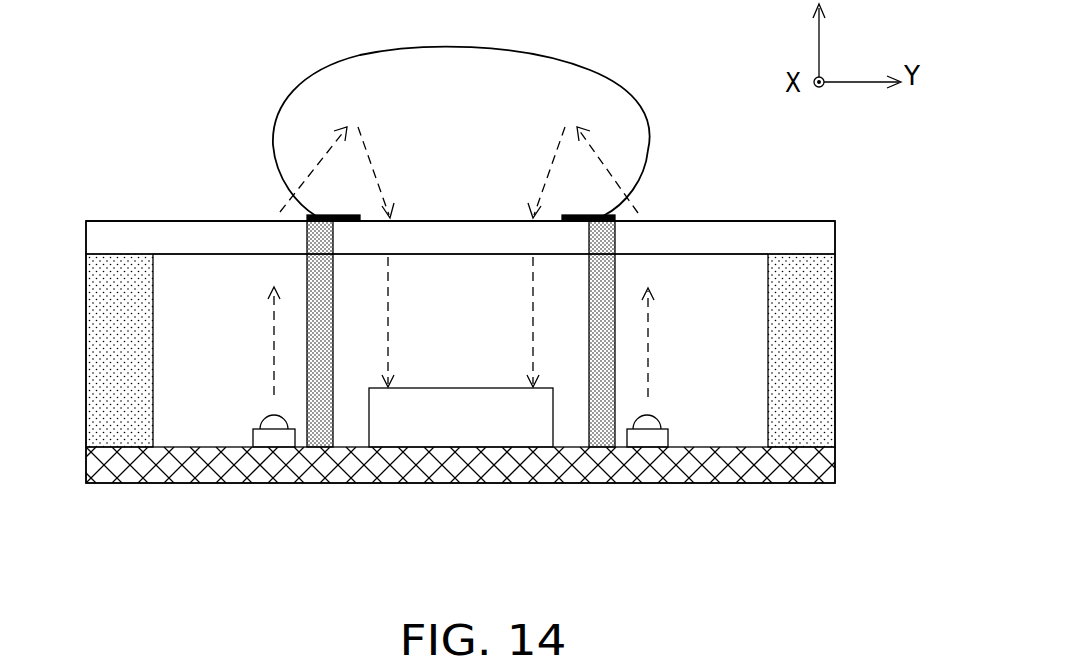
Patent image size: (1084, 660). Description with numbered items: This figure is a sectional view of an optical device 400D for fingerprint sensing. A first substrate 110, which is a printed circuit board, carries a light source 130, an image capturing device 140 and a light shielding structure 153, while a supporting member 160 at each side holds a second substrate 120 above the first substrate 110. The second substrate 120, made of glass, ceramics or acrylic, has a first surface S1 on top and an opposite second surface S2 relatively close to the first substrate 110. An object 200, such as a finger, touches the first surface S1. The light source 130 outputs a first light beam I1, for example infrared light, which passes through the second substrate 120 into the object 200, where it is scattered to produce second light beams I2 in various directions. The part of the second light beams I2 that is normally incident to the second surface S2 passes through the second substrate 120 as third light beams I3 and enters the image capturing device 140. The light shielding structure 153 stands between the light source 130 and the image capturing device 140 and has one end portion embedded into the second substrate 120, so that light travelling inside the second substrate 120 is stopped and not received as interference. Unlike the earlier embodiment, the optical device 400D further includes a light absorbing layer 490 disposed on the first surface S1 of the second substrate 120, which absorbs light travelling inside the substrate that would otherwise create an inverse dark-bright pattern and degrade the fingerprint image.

The optical device 400D is at (150, 125).
The first substrate 110 is at (820, 468).
The second substrate 120 is at (820, 236).
The light source 130 is at (650, 442).
The image capturing device 140 is at (450, 427).
The light shielding structure 153 is at (315, 440).
The supporting member 160 is at (128, 427).
The object 200 is at (650, 137).
The light absorbing layer 490 is at (593, 214).
The first surface S1 is at (188, 207).
The second surface S2 is at (187, 260).
The first light beam I1 is at (648, 332).
The second light beams I2 is at (557, 157).
The third light beams I3 is at (460, 322).